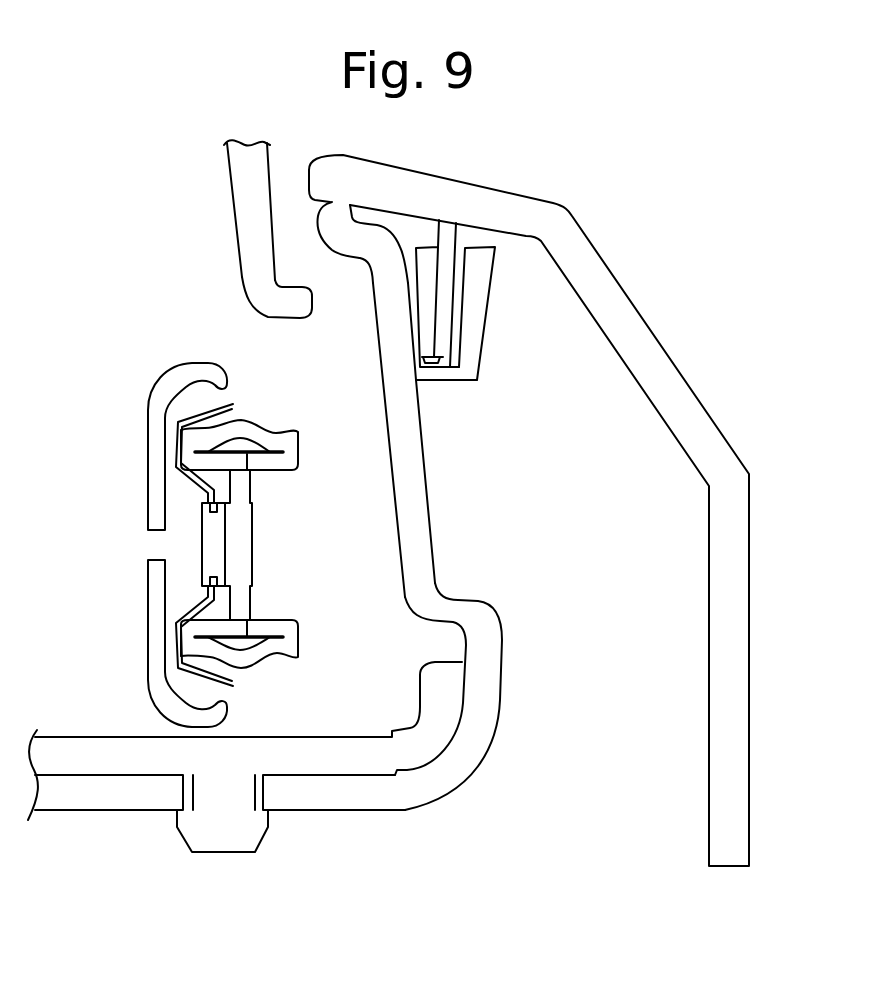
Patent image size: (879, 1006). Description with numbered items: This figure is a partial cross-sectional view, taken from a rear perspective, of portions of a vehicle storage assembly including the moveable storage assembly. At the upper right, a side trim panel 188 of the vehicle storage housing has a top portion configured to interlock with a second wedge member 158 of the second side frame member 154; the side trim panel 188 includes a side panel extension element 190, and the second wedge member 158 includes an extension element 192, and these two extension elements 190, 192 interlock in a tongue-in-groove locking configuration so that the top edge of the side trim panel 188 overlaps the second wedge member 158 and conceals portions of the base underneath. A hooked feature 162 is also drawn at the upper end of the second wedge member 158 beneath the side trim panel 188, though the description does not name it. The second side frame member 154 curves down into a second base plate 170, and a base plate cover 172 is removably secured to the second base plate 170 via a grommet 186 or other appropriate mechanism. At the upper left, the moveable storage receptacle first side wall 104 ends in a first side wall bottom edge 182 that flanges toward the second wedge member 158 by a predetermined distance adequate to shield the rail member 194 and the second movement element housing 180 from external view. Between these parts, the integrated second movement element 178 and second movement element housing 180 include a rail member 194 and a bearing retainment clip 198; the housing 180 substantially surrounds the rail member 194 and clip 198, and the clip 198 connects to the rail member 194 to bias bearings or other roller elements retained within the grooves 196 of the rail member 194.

The moveable storage receptacle first side wall 104 is at (238, 186).
The first side wall bottom edge 182 is at (282, 310).
The side trim panel 188 is at (548, 220).
The hook 162 is at (344, 237).
The second wedge member 158 is at (412, 498).
The side panel extension element 190 is at (432, 303).
The extension element 192 is at (477, 283).
The second side frame member 154 is at (477, 698).
The base plate cover 172 is at (88, 758).
The second base plate 170 is at (338, 793).
The grommet 186 is at (183, 790).
The second movement element housing 180 is at (150, 500).
The bearing retainment clip 198 is at (240, 403).
The grooves 196 is at (273, 433).
The rail member 194 is at (293, 450).
The second movement element 178 is at (250, 538).